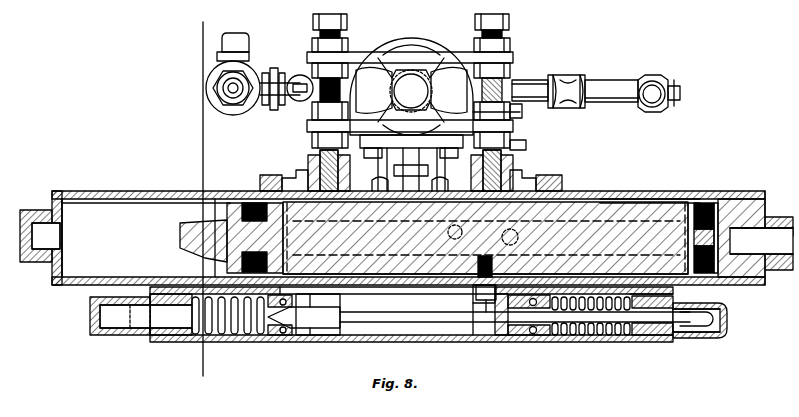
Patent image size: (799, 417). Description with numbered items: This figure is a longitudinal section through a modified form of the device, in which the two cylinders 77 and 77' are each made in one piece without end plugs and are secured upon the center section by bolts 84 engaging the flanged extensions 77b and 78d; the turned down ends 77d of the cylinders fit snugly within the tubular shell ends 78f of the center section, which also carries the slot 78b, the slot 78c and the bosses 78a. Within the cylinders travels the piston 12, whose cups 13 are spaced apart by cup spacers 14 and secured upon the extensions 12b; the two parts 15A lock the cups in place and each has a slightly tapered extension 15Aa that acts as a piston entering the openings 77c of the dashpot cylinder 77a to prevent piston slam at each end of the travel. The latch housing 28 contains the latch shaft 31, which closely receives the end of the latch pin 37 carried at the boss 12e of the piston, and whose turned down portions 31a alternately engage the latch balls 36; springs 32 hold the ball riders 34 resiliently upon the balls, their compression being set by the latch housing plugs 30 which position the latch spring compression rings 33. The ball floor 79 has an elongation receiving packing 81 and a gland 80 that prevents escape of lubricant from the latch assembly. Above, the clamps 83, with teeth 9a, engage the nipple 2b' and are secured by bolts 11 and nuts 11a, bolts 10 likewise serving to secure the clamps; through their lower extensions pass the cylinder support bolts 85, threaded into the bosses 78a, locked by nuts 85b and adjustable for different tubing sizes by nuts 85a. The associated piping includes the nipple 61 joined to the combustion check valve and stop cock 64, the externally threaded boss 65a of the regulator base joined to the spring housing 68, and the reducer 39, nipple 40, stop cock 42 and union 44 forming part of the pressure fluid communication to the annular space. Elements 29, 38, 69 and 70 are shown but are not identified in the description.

The bolts 10 is at (195, 28).
The cylinder 77 is at (408, 252).
The dashpot cylinder 77a is at (37, 208).
The openings 77c is at (42, 262).
The cylinder 77' is at (66, 262).
The flanged extensions 77b is at (262, 158).
The turned down ends 77d is at (612, 197).
The cup lock parts 15A is at (185, 197).
The tapered extension 15Aa is at (178, 201).
The cup spacers 14 is at (216, 199).
The bolts 84 is at (262, 180).
The slot 78b is at (343, 250).
The slot 78c is at (352, 285).
The bosses 78a is at (305, 178).
The flanged extensions 78d is at (300, 185).
The tubular shell ends 78f is at (612, 195).
The piston 12 is at (683, 201).
The extensions 12b is at (720, 285).
The boss 12e is at (460, 290).
The cups 13 is at (714, 197).
The latch pin 37 is at (483, 268).
The springs 32 is at (200, 345).
The latch spring compression rings 33 is at (176, 343).
The latch housing plugs 30 is at (120, 337).
The push rod 29 is at (290, 333).
The latch shaft 31 is at (320, 345).
The turned down portions 31a is at (690, 345).
The latch balls 36 is at (278, 338).
The ball riders 34 is at (270, 340).
The latch housing 28 is at (605, 346).
The ball floor 79 is at (532, 346).
The gland 80 is at (498, 342).
The packing 81 is at (520, 346).
The nuts 85a is at (311, 58).
The cylinder support bolts 85 is at (348, 22).
The nuts 85b is at (508, 150).
The bolts 11 is at (372, 56).
The nuts 11a is at (510, 128).
The clamps 83 is at (420, 68).
The teeth 9a is at (395, 68).
The nipple 2b' is at (415, 165).
The spring housing 68 is at (212, 70).
The fitting nut 69 is at (230, 89).
The fitting ring 70 is at (212, 104).
The nipple 61 is at (222, 43).
The externally threaded boss 65a is at (266, 73).
The combustion check valve and stop cock 64 is at (300, 76).
The link rod 38 is at (530, 84).
The reducer 39 is at (574, 88).
The nipple 40 is at (614, 84).
The union 44 is at (660, 78).
The stop cock 42 is at (681, 88).